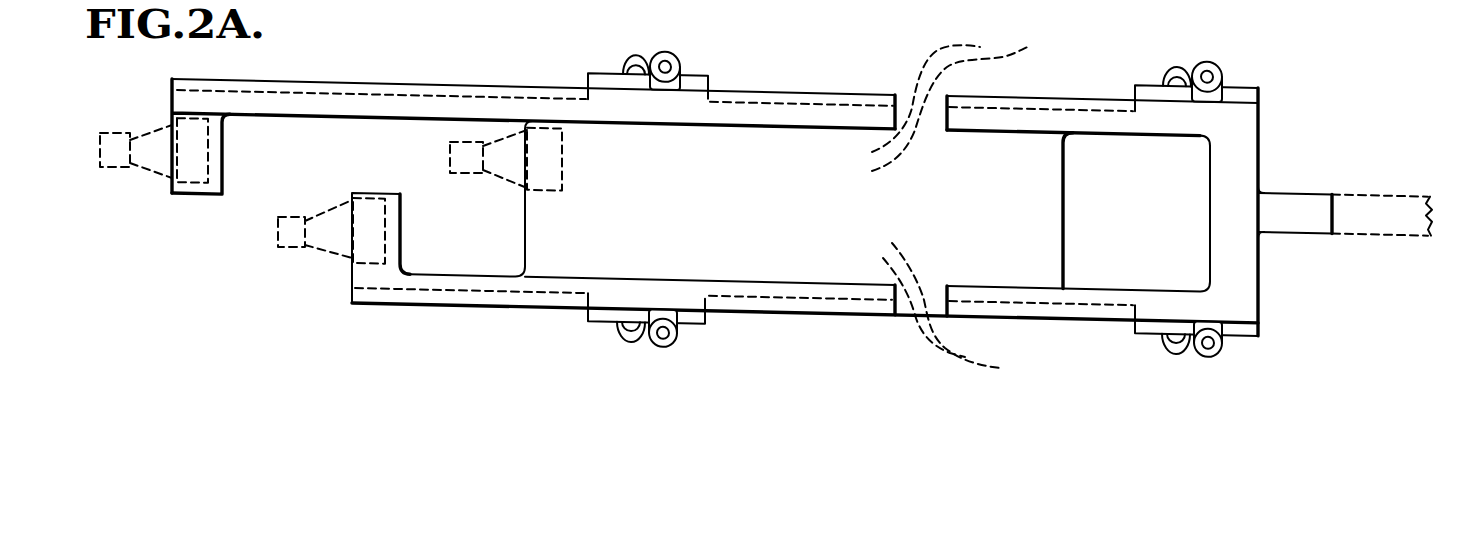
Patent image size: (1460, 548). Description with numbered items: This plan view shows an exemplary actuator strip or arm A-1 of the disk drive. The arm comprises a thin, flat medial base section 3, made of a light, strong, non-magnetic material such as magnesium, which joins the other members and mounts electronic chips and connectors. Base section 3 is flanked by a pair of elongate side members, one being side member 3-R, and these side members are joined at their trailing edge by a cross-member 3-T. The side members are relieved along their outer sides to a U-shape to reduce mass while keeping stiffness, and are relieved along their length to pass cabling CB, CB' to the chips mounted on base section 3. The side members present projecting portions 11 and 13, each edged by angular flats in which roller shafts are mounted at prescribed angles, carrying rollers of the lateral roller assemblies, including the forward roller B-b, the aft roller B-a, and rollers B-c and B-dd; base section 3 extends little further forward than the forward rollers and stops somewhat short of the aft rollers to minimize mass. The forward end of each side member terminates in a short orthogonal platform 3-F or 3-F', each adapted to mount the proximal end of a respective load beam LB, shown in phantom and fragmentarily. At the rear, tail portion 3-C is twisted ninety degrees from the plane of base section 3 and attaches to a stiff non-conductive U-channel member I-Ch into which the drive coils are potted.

The base section 3 is at (636, 229).
The side member 3-R is at (702, 121).
The orthogonal platform 3-F is at (229, 153).
The orthogonal platform 3-F' is at (417, 248).
The cross-member 3-T is at (1248, 146).
The tail portion 3-C is at (1298, 200).
The load beam LB is at (150, 133).
The projecting portion 11 is at (697, 82).
The projecting portion 13 is at (597, 327).
The forward roller B-b is at (625, 62).
The aft roller B-a is at (1163, 76).
The roller B-c is at (615, 340).
The roller B-dd is at (1224, 346).
The actuator strip A-1 is at (900, 65).
The cabling CB is at (966, 95).
The cabling CB' is at (968, 316).
The U-channel member I-Ch is at (1382, 236).